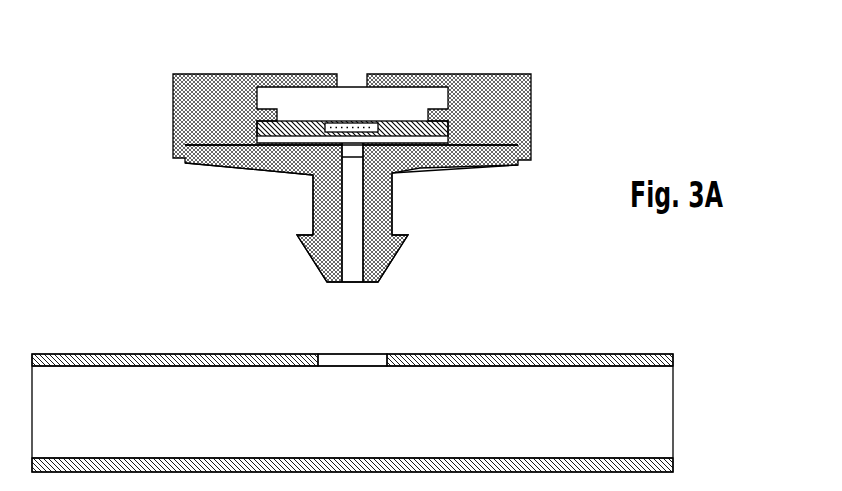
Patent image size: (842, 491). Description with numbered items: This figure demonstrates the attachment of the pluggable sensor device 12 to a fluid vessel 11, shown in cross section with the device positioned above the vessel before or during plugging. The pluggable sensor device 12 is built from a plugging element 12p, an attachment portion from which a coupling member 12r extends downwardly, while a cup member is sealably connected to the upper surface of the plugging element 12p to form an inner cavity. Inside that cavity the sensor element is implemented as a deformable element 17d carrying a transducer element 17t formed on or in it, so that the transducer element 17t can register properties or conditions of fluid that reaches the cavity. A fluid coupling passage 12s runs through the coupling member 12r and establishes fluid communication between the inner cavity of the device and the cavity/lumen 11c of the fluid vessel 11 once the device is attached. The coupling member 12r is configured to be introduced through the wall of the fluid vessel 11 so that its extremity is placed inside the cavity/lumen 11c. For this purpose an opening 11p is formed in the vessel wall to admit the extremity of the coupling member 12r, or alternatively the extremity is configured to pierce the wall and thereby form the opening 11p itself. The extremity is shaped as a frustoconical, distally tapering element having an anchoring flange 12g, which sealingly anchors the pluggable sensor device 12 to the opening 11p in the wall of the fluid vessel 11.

The pluggable sensor device 12 is at (531, 113).
The plugging element 12p is at (433, 172).
The fluid coupling passage 12s is at (350, 218).
The anchoring flange 12g is at (405, 237).
The coupling member 12r is at (315, 259).
The deformable element 17d is at (303, 120).
The transducer element 17t is at (357, 122).
The fluid vessel 11 is at (503, 354).
The opening 11p is at (333, 358).
The cavity/lumen 11c is at (188, 427).